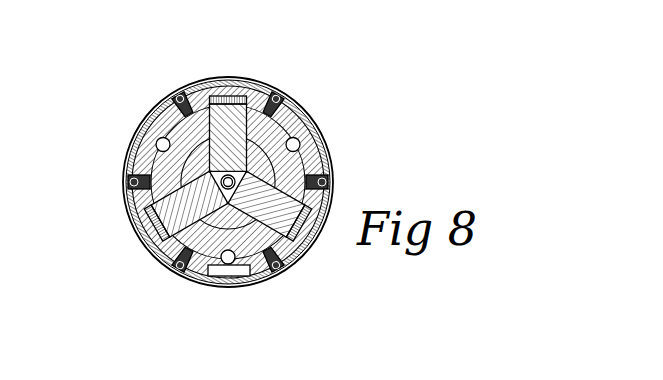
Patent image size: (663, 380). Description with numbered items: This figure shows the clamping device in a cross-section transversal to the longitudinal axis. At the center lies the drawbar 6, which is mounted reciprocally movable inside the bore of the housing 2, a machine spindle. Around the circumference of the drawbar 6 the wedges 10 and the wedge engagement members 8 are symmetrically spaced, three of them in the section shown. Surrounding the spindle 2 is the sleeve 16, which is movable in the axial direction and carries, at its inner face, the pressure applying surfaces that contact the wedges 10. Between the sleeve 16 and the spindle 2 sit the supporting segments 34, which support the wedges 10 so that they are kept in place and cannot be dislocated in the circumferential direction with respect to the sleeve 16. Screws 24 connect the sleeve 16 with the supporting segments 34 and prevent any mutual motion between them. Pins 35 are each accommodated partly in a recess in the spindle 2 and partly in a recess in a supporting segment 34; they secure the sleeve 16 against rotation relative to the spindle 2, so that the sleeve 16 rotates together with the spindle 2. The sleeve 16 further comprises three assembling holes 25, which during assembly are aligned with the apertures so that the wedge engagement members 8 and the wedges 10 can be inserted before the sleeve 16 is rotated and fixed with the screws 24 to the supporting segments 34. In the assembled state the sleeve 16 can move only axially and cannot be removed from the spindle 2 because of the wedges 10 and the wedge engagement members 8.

The housing 2 is at (272, 135).
The drawbar 6 is at (262, 163).
The wedge engagement members 8 is at (233, 118).
The wedges 10 is at (225, 97).
The sleeve 16 is at (143, 220).
The screws 24 is at (183, 99).
The assembling holes 25 is at (143, 138).
The supporting segments 34 is at (147, 163).
The pins 35 is at (165, 138).